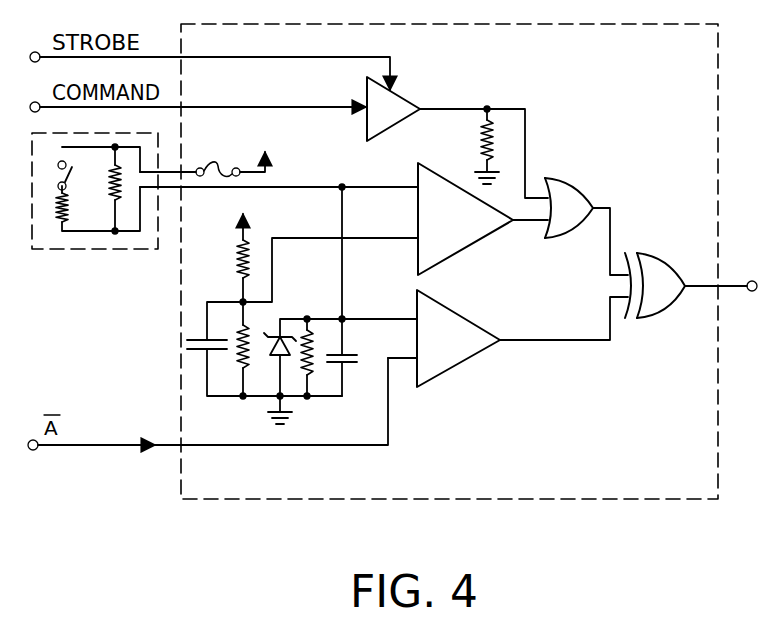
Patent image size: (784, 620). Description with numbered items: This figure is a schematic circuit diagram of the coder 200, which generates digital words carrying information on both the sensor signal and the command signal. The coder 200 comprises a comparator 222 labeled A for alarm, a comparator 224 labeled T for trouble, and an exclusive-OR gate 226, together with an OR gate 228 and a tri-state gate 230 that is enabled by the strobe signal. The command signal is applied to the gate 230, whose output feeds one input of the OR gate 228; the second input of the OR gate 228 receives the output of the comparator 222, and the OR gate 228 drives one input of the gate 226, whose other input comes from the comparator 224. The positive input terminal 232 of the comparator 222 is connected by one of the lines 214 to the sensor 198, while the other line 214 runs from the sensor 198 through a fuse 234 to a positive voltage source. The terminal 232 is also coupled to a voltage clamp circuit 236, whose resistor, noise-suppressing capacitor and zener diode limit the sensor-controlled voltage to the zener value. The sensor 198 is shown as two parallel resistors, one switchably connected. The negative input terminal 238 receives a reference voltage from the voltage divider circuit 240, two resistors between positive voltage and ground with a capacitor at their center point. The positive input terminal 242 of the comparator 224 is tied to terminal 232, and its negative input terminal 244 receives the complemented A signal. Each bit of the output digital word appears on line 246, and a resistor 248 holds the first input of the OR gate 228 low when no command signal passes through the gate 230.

The sensor 198 is at (99, 208).
The coder 200 is at (449, 275).
The lines 214 is at (189, 176).
The comparator 222 is at (462, 250).
The comparator 224 is at (432, 378).
The exclusive-OR gate 226 is at (648, 318).
The OR gate 228 is at (578, 188).
The gate 230 is at (403, 98).
The positive input terminal 232 is at (418, 187).
The fuse 234 is at (218, 153).
The voltage clamp circuit 236 is at (309, 406).
The negative input terminal 238 is at (418, 237).
The voltage divider circuit 240 is at (232, 283).
The positive input terminal 242 is at (417, 319).
The negative input terminal 244 is at (417, 357).
The line 246 is at (734, 284).
The resistor 248 is at (487, 146).